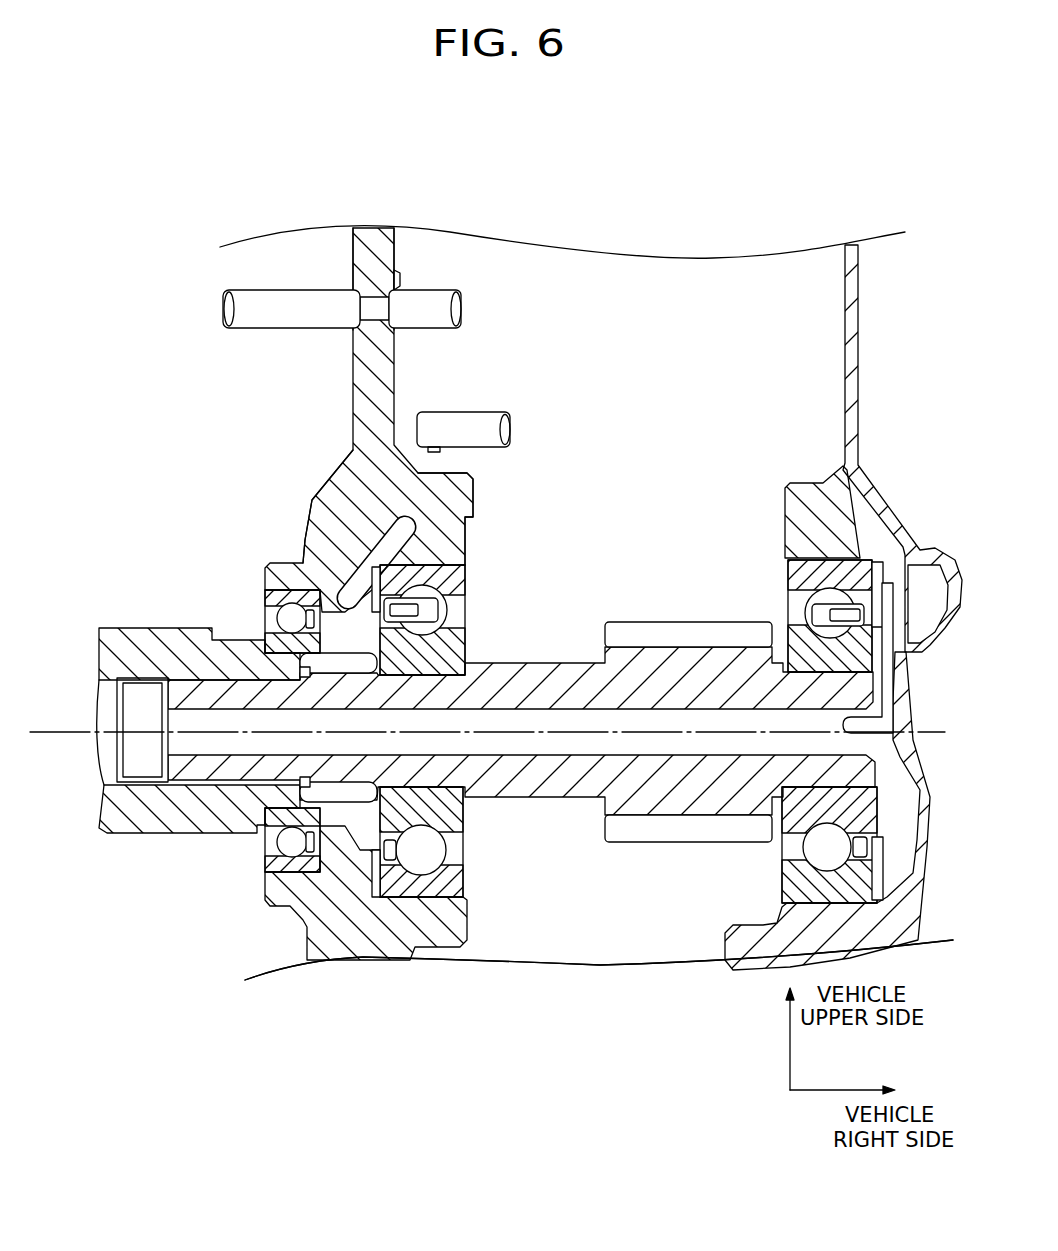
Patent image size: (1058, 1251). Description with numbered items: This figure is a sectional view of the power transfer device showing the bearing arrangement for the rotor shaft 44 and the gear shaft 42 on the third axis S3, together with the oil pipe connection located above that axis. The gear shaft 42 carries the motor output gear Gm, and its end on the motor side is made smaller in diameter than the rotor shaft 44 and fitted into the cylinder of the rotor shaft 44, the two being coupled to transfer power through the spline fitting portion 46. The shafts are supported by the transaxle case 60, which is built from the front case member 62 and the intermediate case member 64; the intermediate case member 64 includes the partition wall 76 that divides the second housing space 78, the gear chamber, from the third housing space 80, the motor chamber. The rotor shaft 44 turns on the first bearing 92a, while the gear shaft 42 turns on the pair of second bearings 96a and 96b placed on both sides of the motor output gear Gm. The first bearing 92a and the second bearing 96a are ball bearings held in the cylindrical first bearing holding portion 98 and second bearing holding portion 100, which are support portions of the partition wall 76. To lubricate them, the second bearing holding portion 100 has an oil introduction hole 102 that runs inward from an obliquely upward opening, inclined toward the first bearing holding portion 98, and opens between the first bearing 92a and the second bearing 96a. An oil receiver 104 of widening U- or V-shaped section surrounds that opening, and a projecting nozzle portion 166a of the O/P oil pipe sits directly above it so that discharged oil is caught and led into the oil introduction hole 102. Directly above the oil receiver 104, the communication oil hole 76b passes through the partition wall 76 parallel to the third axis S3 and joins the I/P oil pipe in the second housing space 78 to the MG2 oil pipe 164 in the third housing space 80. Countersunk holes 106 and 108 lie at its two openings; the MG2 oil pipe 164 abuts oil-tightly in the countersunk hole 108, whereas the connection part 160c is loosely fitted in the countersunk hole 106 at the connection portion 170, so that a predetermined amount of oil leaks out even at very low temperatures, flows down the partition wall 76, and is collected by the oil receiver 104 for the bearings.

The gear shaft 42 is at (548, 778).
The rotor shaft 44 is at (138, 812).
The spline fitting portion 46 is at (198, 672).
The transaxle case 60 is at (593, 1005).
The front case member 62 is at (858, 364).
The intermediate case member 64 is at (322, 987).
The partition wall 76 is at (363, 397).
The communication oil hole 76b is at (357, 307).
The second housing space 78 is at (790, 314).
The third housing space 80 is at (192, 404).
The first bearing 92a is at (262, 618).
The second bearing 96a is at (468, 608).
The second bearing 96b is at (770, 590).
The first bearing holding portion 98 is at (292, 882).
The second bearing holding portion 100 is at (428, 920).
The oil introduction hole 102 is at (325, 493).
The oil receiver 104 is at (456, 497).
The countersunk hole 106 is at (401, 297).
The countersunk hole 108 is at (347, 315).
The connection part 160c is at (433, 300).
The MG2 oil pipe 164 is at (290, 313).
The projecting nozzle portion 166a is at (470, 427).
The connection portion 170 is at (433, 257).
The motor output gear Gm is at (663, 636).
The third axis S3 is at (487, 735).